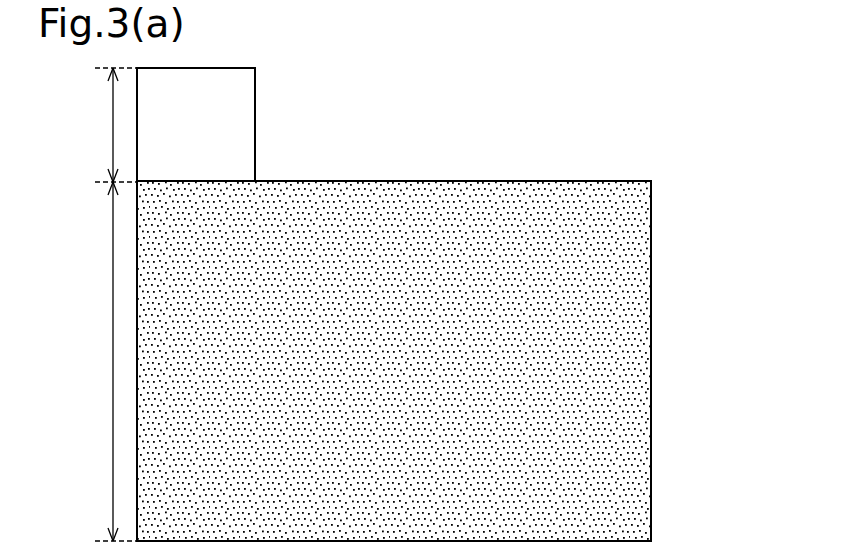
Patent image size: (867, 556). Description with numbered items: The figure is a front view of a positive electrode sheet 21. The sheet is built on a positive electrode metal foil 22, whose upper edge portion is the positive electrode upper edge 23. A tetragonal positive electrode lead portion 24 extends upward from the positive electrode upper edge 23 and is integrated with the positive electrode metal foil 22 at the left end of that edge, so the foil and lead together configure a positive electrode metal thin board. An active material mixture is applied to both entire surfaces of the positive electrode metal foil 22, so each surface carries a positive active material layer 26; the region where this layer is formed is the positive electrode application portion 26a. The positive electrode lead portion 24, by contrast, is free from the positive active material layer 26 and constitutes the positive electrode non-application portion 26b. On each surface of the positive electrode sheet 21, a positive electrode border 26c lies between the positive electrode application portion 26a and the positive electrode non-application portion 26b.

The positive electrode sheet 21 is at (703, 143).
The positive electrode metal foil 22 is at (637, 413).
The positive electrode upper edge 23 is at (430, 180).
The positive electrode lead portion 24 is at (240, 83).
The positive active material layer 26 is at (637, 468).
The positive electrode application portion 26a is at (112, 357).
The positive electrode non-application portion 26b is at (112, 123).
The positive electrode border 26c is at (232, 180).